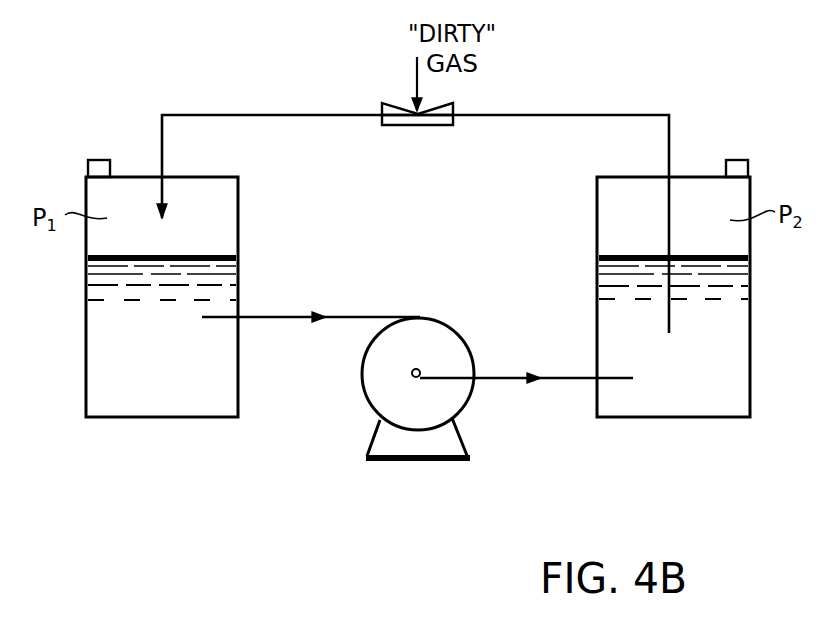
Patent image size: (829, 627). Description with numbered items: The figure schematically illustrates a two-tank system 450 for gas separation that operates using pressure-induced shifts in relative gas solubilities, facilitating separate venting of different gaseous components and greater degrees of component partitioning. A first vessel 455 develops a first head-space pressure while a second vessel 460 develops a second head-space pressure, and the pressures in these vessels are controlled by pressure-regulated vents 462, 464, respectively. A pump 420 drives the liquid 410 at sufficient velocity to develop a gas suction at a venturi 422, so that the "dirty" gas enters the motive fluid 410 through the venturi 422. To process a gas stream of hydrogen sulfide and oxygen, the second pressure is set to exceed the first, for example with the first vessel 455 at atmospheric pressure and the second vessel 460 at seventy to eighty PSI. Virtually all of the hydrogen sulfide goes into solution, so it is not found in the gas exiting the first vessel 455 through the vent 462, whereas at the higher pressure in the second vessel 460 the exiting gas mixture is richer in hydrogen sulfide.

The liquid 410 is at (107, 397).
The pump 420 is at (428, 461).
The venturi 422 is at (418, 125).
The two-tank system 450 is at (600, 74).
The first vessel 455 is at (86, 361).
The second vessel 460 is at (750, 362).
The pressure-regulated vent 462 is at (92, 160).
The pressure-regulated vent 464 is at (742, 160).